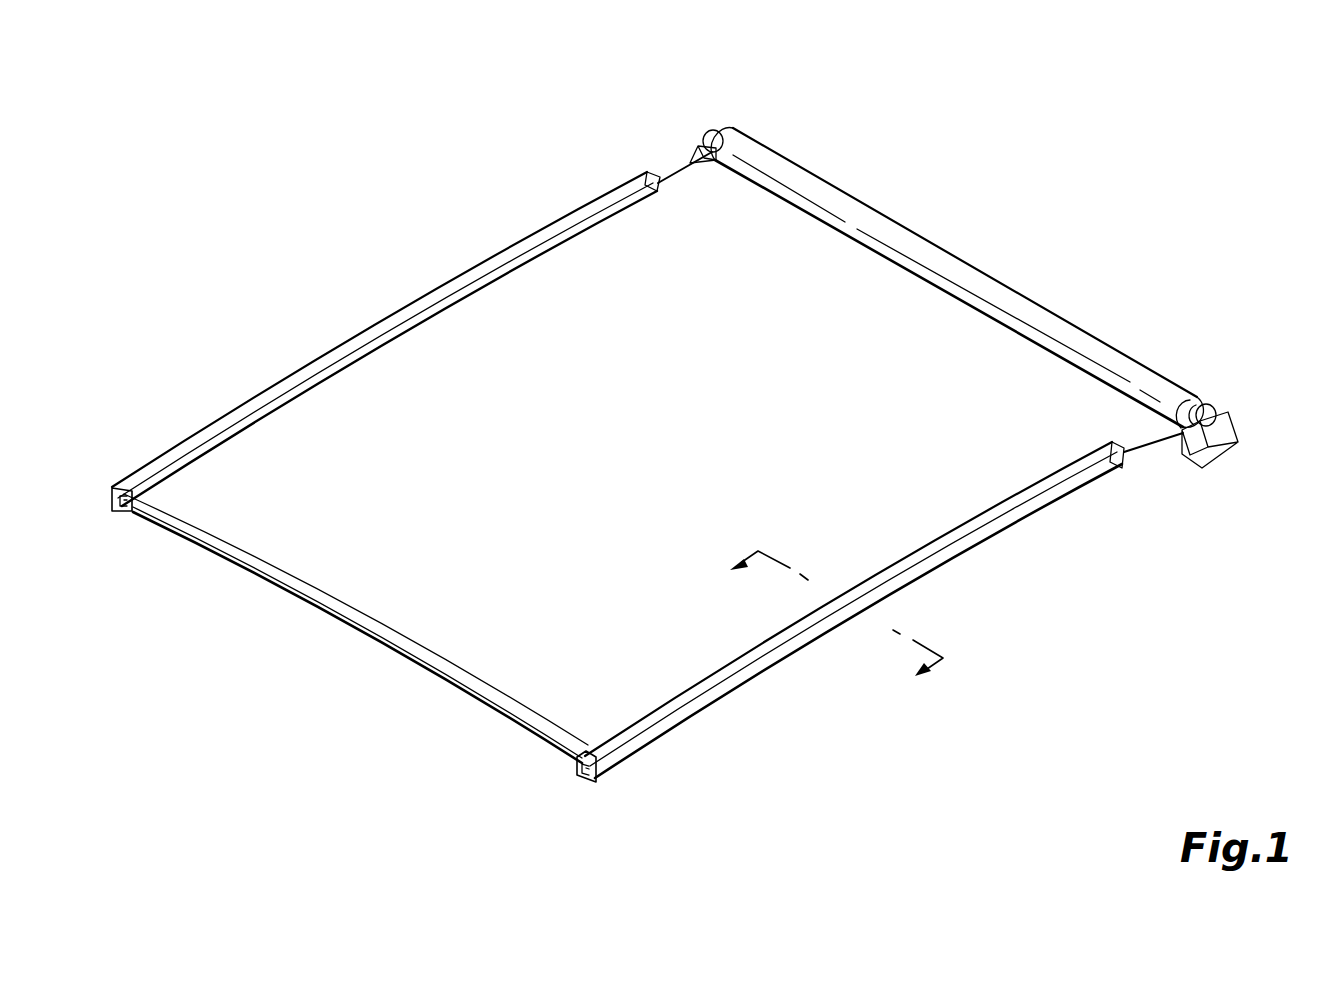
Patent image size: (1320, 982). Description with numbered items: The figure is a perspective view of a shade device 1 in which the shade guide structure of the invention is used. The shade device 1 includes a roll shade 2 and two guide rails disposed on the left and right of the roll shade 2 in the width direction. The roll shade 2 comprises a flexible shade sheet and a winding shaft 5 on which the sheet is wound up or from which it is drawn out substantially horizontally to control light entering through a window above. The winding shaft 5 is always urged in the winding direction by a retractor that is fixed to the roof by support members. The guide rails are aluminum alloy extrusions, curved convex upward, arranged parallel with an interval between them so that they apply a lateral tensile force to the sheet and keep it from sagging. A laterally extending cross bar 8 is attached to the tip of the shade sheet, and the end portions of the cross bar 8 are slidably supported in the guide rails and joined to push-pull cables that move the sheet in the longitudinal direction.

The shade device 1 is at (448, 180).
The roll shade 2 is at (1053, 300).
The winding shaft 5 is at (1191, 410).
The cross bar 8 is at (320, 600).